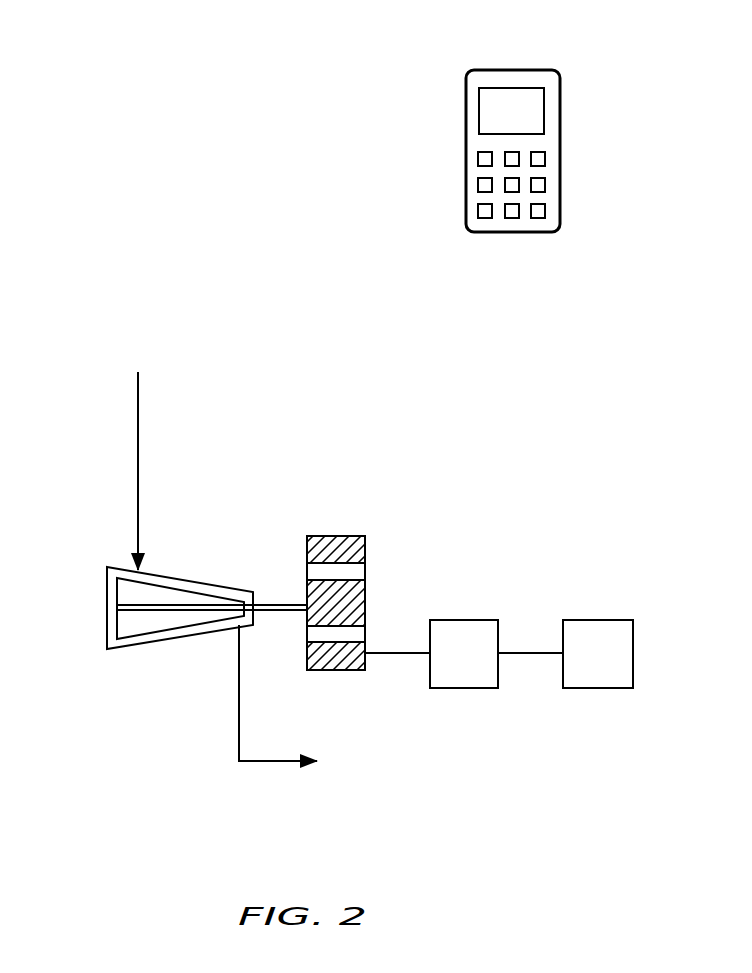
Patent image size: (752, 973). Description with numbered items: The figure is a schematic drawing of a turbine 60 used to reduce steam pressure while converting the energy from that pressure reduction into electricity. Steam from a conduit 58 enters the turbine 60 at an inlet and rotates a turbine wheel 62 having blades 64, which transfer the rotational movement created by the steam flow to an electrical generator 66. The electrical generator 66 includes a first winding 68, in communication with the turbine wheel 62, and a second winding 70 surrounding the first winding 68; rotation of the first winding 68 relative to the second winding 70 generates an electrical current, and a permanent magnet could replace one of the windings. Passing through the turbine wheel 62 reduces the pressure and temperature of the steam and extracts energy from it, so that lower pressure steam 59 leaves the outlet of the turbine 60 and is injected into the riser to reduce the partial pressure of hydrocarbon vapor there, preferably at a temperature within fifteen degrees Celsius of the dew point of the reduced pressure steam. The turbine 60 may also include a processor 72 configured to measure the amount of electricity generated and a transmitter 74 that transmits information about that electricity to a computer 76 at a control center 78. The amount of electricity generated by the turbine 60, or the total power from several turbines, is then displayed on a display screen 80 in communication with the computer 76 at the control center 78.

The conduit 58 is at (140, 421).
The lower pressure steam 59 is at (277, 763).
The turbine 60 is at (472, 397).
The turbine wheel 62 is at (116, 608).
The blades 64 is at (157, 597).
The electrical generator 66 is at (390, 522).
The first winding 68 is at (365, 600).
The second winding 70 is at (335, 670).
The processor 72 is at (465, 620).
The transmitter 74 is at (600, 620).
The computer 76 is at (466, 147).
The control center 78 is at (437, 58).
The display screen 80 is at (530, 115).